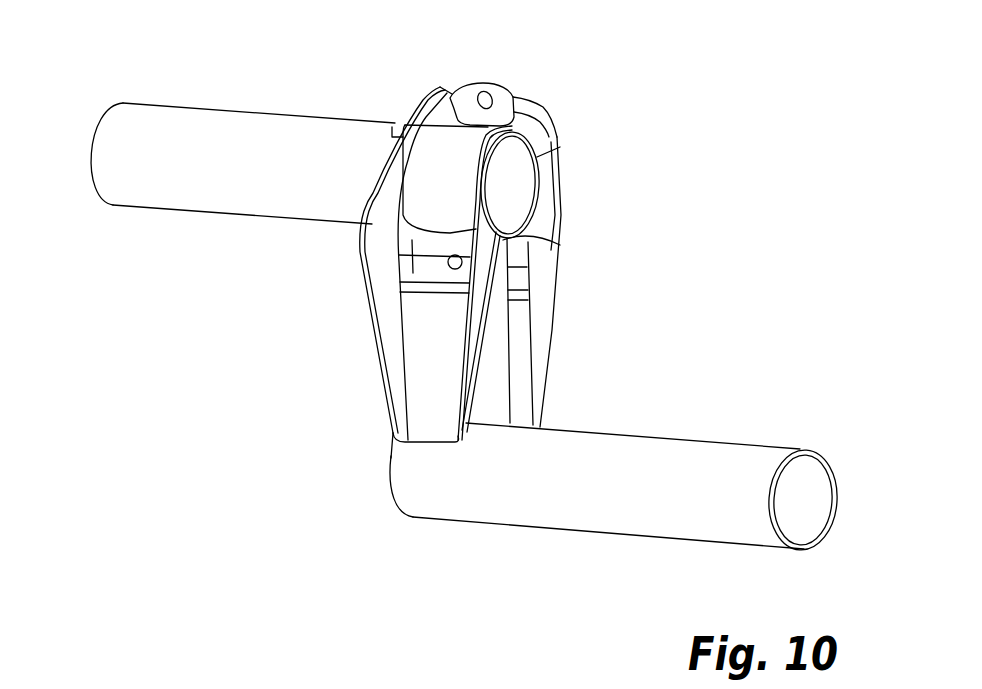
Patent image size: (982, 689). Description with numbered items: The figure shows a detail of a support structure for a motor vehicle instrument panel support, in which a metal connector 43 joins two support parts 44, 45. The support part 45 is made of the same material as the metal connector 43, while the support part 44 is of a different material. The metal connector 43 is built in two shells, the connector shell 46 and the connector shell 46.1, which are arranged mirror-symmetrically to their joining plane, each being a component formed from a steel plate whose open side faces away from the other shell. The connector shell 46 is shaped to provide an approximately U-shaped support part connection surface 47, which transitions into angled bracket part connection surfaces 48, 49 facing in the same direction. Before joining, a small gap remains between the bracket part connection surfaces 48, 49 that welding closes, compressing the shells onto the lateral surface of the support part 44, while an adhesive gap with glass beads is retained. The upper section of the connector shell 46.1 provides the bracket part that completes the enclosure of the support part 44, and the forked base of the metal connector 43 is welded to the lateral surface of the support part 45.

The metal connector 43 is at (353, 275).
The support part 44 is at (251, 170).
The support part 45 is at (648, 492).
The connector shell 46 is at (565, 327).
The connector shell 46.1 is at (365, 325).
The support part connection surface 47 is at (538, 207).
The bracket part connection surface 48 is at (524, 118).
The bracket part connection surface 49 is at (513, 248).